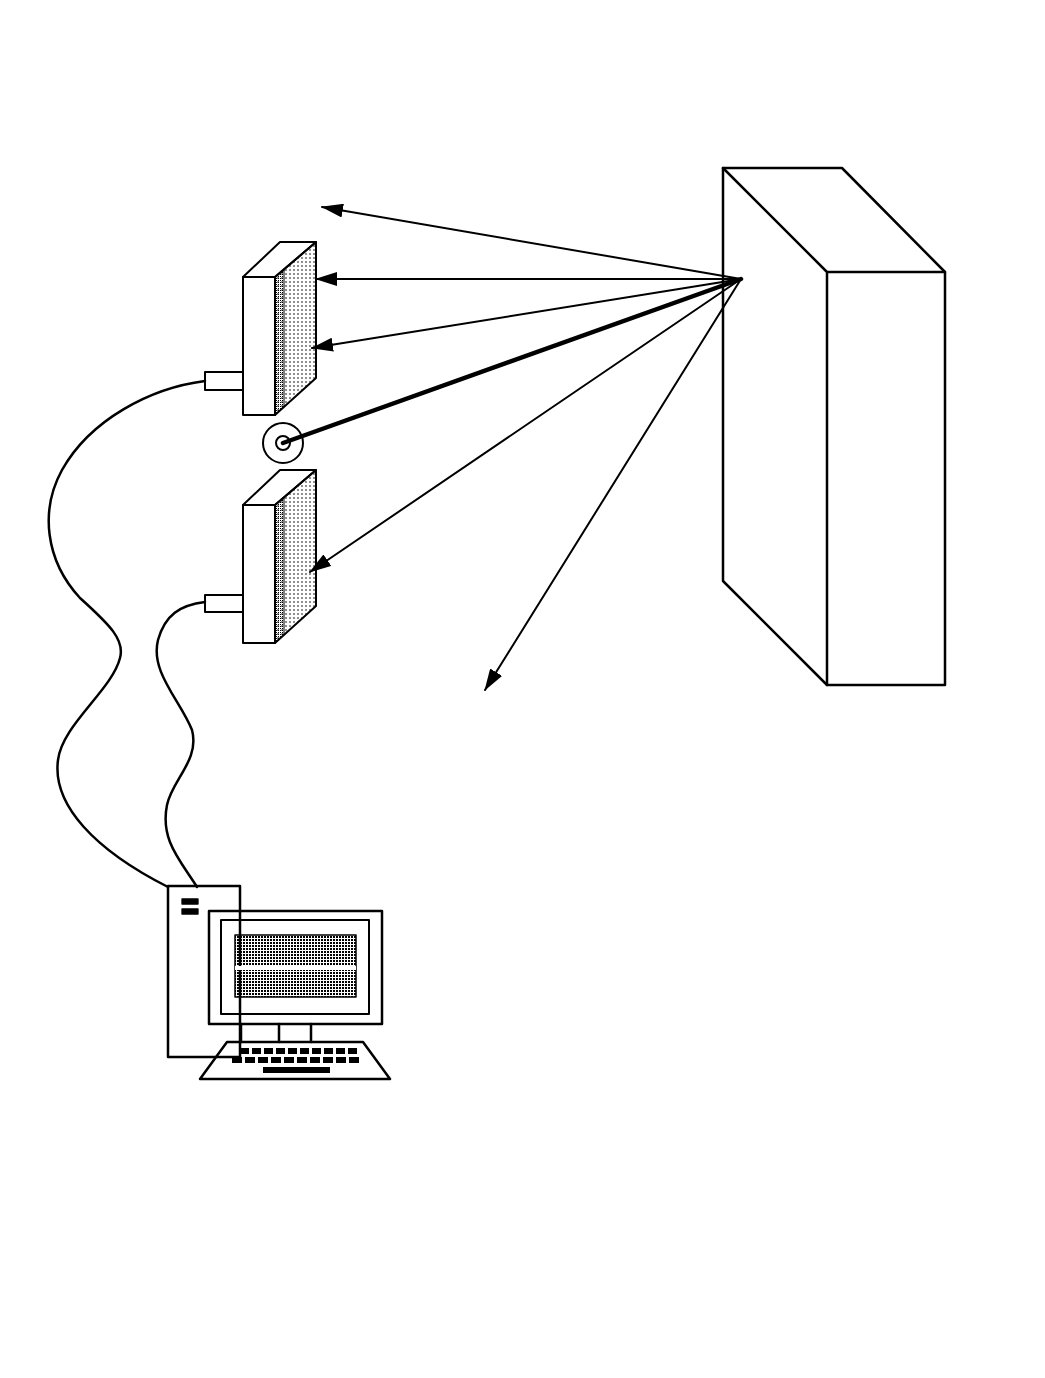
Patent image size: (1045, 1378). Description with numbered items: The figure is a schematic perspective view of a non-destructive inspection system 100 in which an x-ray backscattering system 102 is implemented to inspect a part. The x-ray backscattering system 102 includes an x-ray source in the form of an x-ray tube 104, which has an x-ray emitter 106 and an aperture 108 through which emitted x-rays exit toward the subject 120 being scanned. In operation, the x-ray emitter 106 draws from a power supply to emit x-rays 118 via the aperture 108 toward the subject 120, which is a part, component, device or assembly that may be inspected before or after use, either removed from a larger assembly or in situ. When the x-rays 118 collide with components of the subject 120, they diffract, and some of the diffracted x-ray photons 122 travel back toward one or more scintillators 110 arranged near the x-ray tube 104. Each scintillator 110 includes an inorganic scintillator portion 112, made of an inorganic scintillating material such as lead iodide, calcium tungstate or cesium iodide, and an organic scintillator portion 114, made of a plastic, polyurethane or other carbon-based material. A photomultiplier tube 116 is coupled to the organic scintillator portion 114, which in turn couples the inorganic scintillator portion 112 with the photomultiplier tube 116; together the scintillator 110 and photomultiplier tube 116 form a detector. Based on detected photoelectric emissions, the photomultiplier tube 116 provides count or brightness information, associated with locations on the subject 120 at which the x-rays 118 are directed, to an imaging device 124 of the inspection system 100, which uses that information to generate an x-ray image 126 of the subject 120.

The non-destructive inspection system 100 is at (128, 42).
The x-ray backscattering system 102 is at (322, 152).
The x-ray tube 104 is at (266, 460).
The x-ray emitter 106 is at (266, 440).
The aperture 108 is at (290, 445).
The scintillator 110 is at (276, 226).
The inorganic scintillator portion 112 is at (305, 300).
The organic scintillator portion 114 is at (262, 312).
The photomultiplier tube 116 is at (222, 372).
The x-rays 118 is at (396, 402).
The subject 120 is at (783, 168).
The diffracted x-ray photons 122 is at (455, 327).
The imaging device 124 is at (356, 1098).
The x-ray image 126 is at (357, 968).